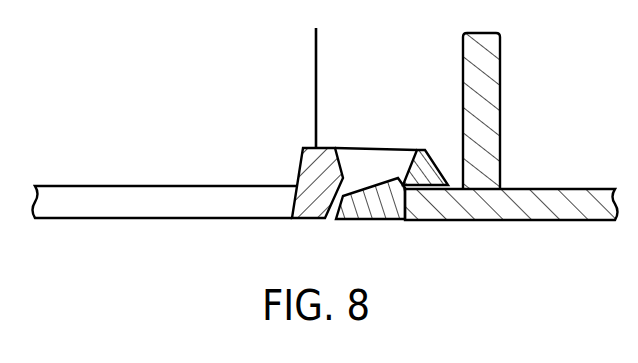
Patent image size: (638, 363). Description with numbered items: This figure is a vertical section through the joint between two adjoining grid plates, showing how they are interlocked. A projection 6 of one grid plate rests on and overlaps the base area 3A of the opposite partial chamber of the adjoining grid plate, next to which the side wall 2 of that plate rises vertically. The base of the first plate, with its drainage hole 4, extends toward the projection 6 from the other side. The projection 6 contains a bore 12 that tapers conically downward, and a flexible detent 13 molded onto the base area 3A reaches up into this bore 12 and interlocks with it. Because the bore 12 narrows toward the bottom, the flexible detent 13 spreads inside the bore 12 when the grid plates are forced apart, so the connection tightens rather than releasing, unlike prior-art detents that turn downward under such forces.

The side wall 2 is at (462, 53).
The base area 3A is at (450, 215).
The drainage hole 4 is at (222, 219).
The projection 6 is at (323, 148).
The bore 12 is at (370, 160).
The flexible detent 13 is at (394, 203).